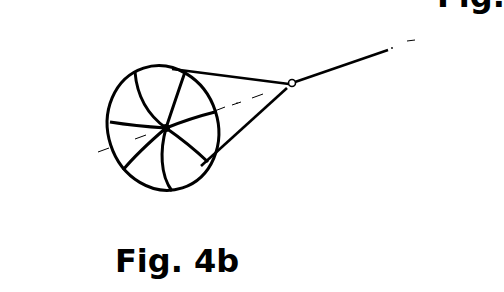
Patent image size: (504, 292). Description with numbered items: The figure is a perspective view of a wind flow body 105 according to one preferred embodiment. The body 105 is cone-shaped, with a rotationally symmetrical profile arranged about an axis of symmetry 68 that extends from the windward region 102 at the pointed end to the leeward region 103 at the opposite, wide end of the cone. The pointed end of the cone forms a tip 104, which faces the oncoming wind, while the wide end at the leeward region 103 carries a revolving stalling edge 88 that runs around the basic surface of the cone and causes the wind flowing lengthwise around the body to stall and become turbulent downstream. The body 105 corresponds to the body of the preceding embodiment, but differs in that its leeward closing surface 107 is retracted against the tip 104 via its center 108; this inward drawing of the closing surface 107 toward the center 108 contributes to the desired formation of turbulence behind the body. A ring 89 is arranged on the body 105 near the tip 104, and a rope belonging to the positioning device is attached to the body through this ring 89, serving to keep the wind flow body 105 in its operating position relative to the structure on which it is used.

The revolving stalling edge 88 is at (178, 189).
The body 105 is at (118, 68).
The leeward region 103 is at (100, 107).
The leeward closing surface 107 is at (147, 165).
The center 108 is at (168, 129).
The windward region 102 is at (250, 60).
The tip 104 is at (273, 100).
The ring 89 is at (294, 80).
The axis of symmetry 68 is at (410, 42).